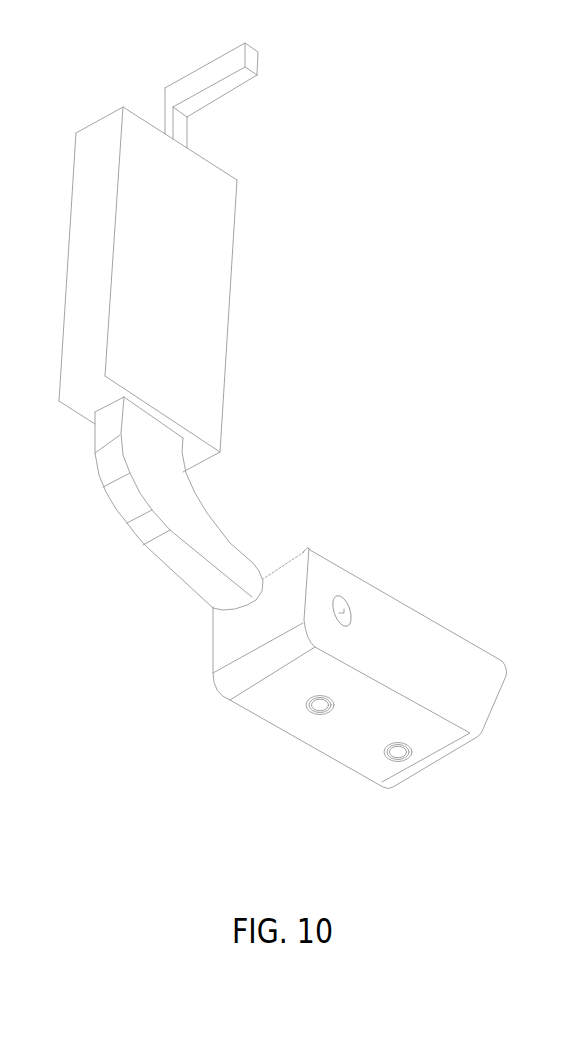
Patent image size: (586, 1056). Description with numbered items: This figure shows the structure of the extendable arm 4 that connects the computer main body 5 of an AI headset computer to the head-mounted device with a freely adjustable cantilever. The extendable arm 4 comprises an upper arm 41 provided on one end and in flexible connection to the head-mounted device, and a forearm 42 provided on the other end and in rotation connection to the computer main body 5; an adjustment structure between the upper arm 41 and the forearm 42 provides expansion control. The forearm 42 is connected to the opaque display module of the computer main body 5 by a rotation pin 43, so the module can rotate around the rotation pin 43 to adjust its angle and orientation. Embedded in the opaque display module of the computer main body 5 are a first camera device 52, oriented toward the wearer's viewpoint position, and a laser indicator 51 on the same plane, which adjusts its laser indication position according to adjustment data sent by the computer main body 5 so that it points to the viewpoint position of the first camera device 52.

The extendable arm 4 is at (183, 250).
The upper arm 41 is at (182, 78).
The forearm 42 is at (208, 513).
The rotation pin 43 is at (349, 609).
The computer main body 5 is at (212, 655).
The laser indicator 51 is at (390, 762).
The first camera device 52 is at (308, 708).